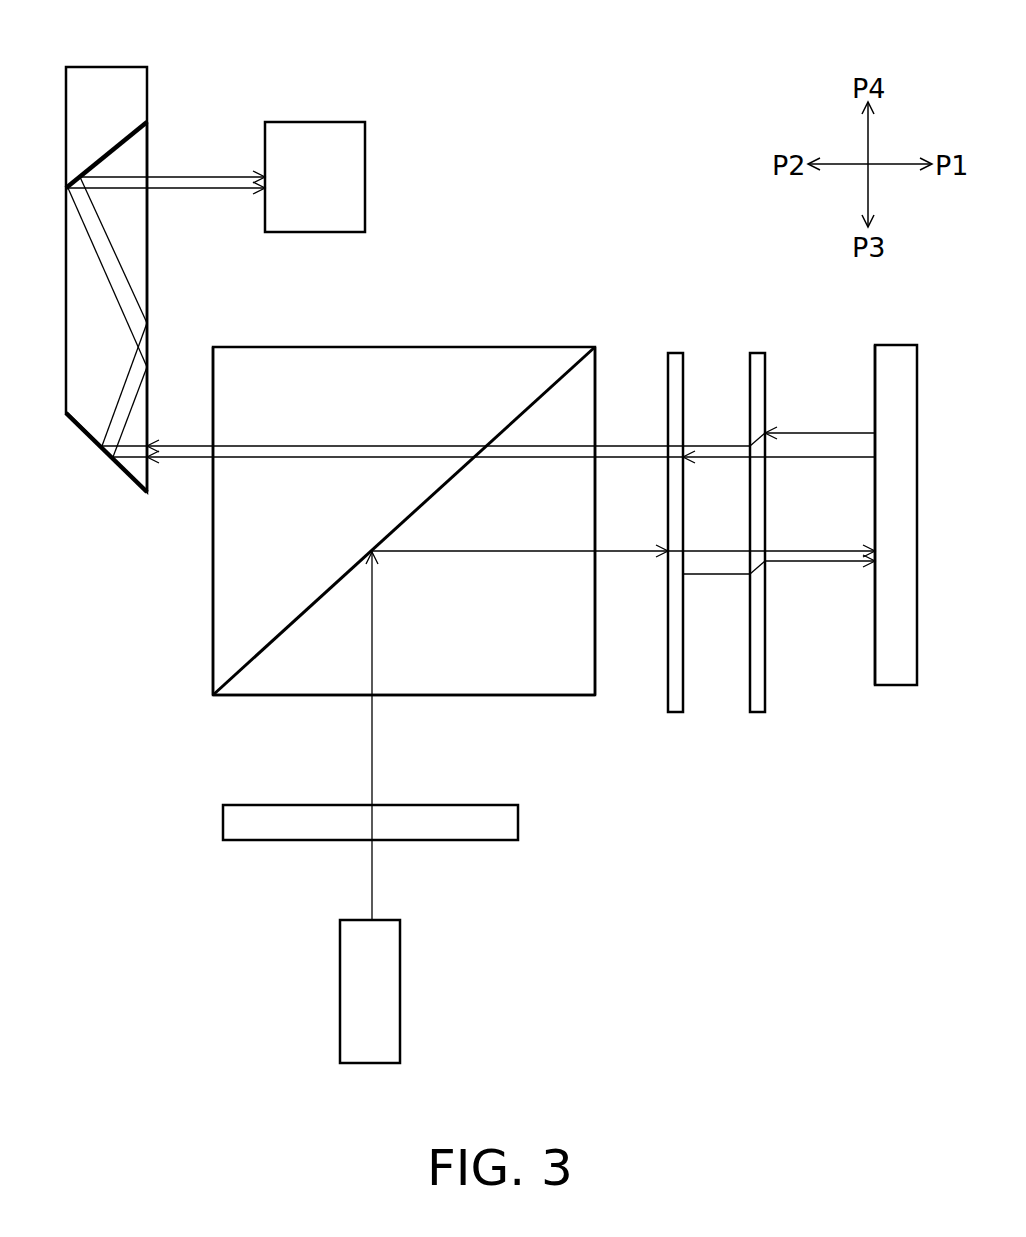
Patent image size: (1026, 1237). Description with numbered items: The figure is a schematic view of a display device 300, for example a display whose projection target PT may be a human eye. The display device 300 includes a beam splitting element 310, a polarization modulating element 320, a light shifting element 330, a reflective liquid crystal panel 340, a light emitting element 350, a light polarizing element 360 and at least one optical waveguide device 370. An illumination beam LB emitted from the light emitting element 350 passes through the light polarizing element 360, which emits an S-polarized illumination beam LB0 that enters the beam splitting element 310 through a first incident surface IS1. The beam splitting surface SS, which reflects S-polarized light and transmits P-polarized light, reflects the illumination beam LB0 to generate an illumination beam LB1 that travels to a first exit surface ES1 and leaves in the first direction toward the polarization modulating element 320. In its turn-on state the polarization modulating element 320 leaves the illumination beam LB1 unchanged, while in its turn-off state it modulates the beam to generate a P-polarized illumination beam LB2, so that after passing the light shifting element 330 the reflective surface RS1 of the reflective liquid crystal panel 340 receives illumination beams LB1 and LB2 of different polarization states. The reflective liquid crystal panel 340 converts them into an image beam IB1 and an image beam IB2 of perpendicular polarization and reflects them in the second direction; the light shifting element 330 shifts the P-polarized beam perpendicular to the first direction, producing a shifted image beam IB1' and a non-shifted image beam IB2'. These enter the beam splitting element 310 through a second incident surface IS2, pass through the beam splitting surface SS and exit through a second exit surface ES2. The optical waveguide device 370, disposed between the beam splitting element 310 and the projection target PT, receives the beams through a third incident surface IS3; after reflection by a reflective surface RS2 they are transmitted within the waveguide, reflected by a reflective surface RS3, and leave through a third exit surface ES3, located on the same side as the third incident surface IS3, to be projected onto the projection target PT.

The display device 300 is at (916, 927).
The beam splitting element 310 is at (422, 532).
The polarization modulating element 320 is at (673, 352).
The light shifting element 330 is at (753, 352).
The reflective liquid crystal panel 340 is at (875, 505).
The light emitting element 350 is at (401, 998).
The light polarizing element 360 is at (519, 822).
The optical waveguide device 370 is at (128, 283).
The projection target PT is at (290, 121).
The beam splitting surface SS is at (327, 603).
The first incident surface IS1 is at (280, 697).
The second incident surface IS2 is at (609, 360).
The third incident surface IS3 is at (159, 476).
The first exit surface ES1 is at (593, 608).
The second exit surface ES2 is at (225, 414).
The third exit surface ES3 is at (134, 205).
The reflective surface RS1 is at (873, 646).
The reflective surface RS2 is at (84, 416).
The reflective surface RS3 is at (135, 137).
The illumination beam LB is at (373, 880).
The illumination beam LB0 is at (373, 650).
The illumination beam LB1 is at (492, 551).
The illumination beam LB2 is at (812, 562).
The image beam IB1 is at (812, 423).
The image beam IB2 is at (779, 478).
The shifted image beam IB1' is at (415, 291).
The non-shifted image beam IB2' is at (374, 343).